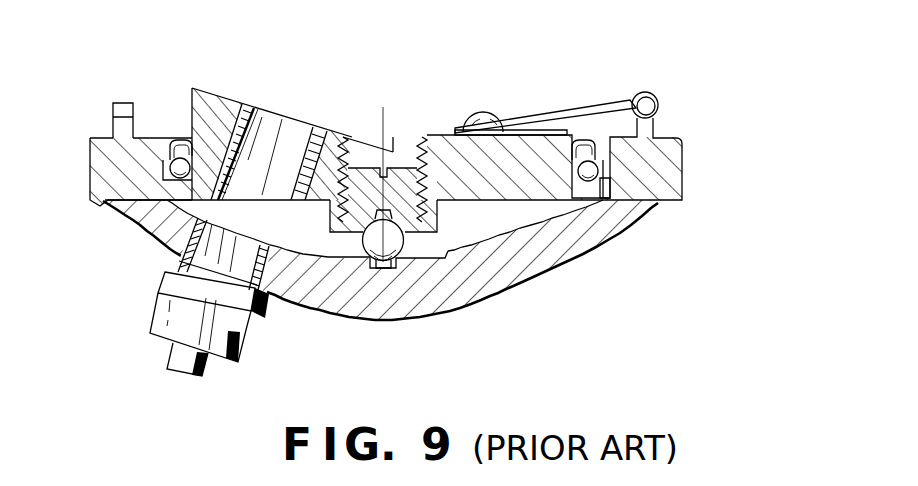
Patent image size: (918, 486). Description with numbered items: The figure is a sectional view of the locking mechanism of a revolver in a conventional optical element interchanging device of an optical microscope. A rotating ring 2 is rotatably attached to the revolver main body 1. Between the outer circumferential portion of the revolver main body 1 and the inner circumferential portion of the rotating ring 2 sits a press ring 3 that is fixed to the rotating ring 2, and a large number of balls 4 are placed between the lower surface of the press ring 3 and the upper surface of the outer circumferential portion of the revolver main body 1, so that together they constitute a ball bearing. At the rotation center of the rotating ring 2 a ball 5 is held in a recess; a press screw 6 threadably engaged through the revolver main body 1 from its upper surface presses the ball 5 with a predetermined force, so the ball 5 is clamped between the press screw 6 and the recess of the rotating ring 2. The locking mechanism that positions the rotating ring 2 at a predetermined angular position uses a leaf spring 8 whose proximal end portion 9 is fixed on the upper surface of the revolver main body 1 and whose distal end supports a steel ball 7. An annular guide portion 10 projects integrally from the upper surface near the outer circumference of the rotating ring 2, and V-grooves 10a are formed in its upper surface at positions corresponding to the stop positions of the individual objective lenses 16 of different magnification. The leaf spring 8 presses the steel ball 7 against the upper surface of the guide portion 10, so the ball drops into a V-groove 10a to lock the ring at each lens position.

The revolver main body 1 is at (443, 150).
The rotating ring 2 is at (552, 263).
The press ring 3 is at (178, 140).
The balls 4 is at (126, 205).
The ball 5 is at (362, 241).
The press screw 6 is at (428, 216).
The steel ball 7 is at (656, 115).
The leaf spring 8 is at (507, 122).
The proximal end portion 9 is at (467, 122).
The annular guide portion 10 is at (113, 114).
The V-grooves 10a is at (118, 108).
The objective lenses 16 is at (155, 318).